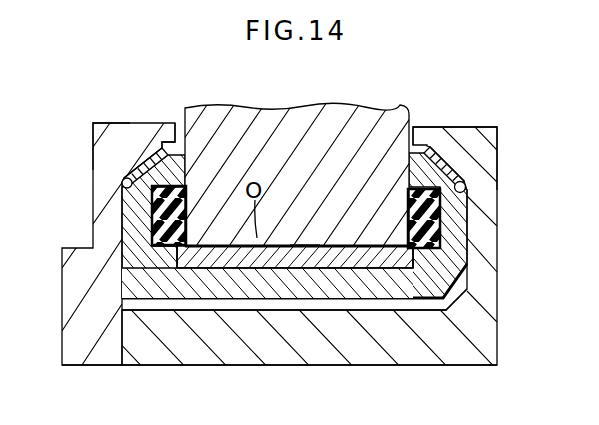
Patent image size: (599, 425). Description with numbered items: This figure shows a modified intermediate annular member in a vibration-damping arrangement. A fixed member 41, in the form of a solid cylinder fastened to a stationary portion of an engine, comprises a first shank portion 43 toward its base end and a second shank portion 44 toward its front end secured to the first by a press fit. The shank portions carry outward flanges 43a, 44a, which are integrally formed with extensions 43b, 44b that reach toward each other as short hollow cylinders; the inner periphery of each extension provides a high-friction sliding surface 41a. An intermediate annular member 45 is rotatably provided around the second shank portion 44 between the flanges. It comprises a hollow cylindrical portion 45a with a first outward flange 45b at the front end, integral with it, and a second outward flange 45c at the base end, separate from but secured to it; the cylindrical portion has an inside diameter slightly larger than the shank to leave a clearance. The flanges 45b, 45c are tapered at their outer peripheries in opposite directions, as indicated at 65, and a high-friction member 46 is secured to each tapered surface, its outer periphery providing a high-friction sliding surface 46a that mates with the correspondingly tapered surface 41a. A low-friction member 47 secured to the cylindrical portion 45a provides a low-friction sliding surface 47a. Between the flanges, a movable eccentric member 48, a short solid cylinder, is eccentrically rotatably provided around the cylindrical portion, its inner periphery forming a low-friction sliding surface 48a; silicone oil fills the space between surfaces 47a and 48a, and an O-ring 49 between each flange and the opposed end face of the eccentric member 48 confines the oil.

The fixed member 41 is at (488, 356).
The high-friction sliding surface 41a is at (120, 190).
The first shank portion 43 is at (108, 365).
The outward flange 43a is at (93, 130).
The extension 43b is at (176, 122).
The second shank portion 44 is at (488, 325).
The outward flange 44a is at (488, 258).
The extension 44b is at (427, 130).
The intermediate annular member 45 is at (447, 282).
The hollow cylindrical portion 45a is at (315, 286).
The first outward flange 45b is at (460, 226).
The second outward flange 45c is at (140, 226).
The high-friction member 46 is at (160, 157).
The high-friction sliding surface 46a is at (128, 173).
The low-friction member 47 is at (236, 258).
The low-friction sliding surface 47a is at (308, 238).
The movable eccentric member 48 is at (355, 108).
The low-friction sliding surface 48a is at (363, 248).
The O-ring 49 is at (186, 214).
The tapered surface 65 is at (148, 163).